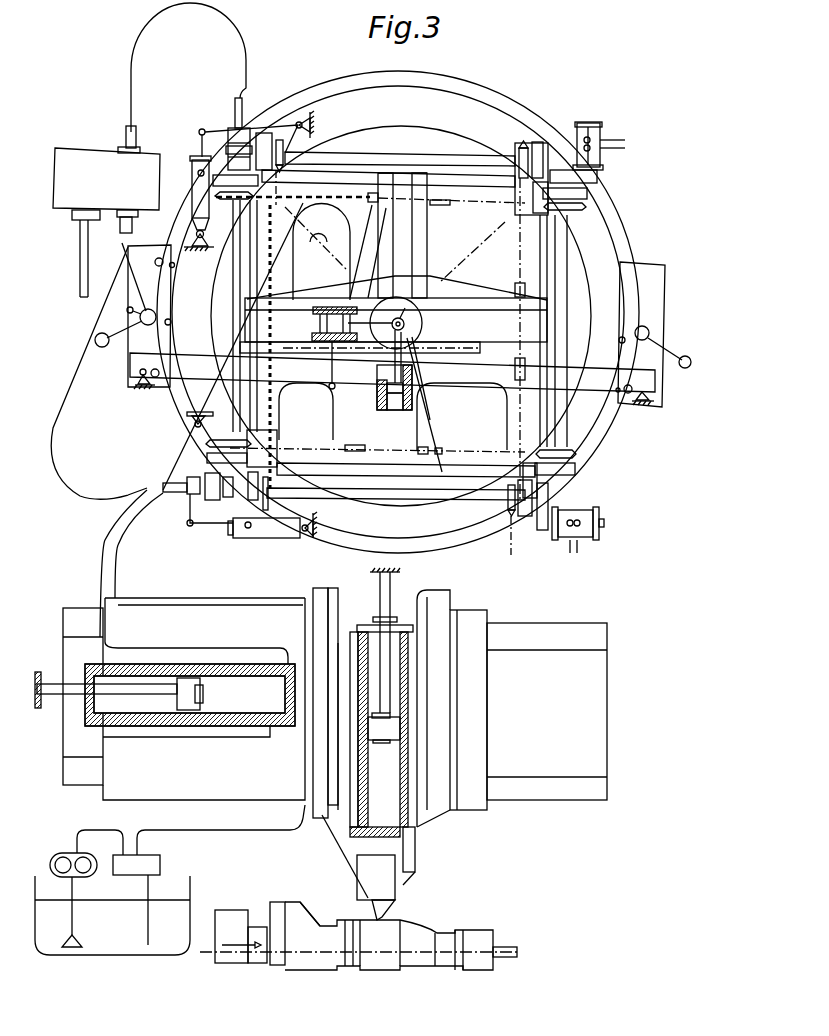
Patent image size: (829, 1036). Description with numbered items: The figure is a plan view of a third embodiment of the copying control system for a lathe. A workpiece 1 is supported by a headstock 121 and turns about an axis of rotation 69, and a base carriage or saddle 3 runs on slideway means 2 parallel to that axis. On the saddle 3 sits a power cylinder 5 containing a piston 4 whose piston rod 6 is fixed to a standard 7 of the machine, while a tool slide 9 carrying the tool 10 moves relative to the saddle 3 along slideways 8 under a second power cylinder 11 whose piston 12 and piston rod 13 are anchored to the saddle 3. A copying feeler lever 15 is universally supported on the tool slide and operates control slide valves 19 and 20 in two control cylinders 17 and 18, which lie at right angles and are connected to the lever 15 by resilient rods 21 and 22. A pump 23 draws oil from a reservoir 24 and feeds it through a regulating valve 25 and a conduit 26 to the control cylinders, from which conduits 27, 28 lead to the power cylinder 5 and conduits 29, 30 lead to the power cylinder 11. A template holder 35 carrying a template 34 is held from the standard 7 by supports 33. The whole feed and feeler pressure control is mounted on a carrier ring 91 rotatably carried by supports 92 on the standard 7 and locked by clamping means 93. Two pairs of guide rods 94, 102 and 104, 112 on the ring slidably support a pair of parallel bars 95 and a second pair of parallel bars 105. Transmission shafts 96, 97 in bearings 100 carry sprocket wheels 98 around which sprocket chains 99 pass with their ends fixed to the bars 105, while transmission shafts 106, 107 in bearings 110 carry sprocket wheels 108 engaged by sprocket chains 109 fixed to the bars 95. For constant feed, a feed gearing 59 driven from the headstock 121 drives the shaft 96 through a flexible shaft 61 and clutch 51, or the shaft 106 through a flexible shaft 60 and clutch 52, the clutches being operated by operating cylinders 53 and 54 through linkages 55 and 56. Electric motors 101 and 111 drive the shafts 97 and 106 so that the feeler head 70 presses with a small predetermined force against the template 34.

The workpiece 1 is at (465, 926).
The slideway means 2 is at (80, 606).
The base carriage or saddle 3 is at (373, 574).
The piston 4 is at (190, 704).
The power cylinder 5 is at (238, 722).
The piston rod 6 is at (53, 696).
The standard 7 is at (140, 383).
The slideways 8 is at (318, 822).
The tool slide 9 is at (340, 846).
The tool 10 is at (388, 908).
The power cylinder 11 is at (405, 765).
The piston 12 is at (392, 727).
The piston rod 13 is at (393, 683).
The copying feeler lever 15 is at (393, 314).
The control cylinder 17 is at (315, 308).
The control cylinder 18 is at (405, 395).
The control slide valve 19 is at (312, 325).
The control slide valve 20 is at (389, 412).
The resilient rod 21 is at (362, 320).
The resilient rod 22 is at (410, 350).
The pump 23 is at (60, 852).
The reservoir 24 is at (172, 900).
The regulating valve 25 is at (125, 876).
The conduit 26 is at (252, 833).
The conduit 27 is at (115, 534).
The conduit 28 is at (124, 540).
The conduit 29 is at (450, 586).
The conduit 30 is at (462, 630).
The supports 33 is at (135, 378).
The template 34 is at (480, 346).
The template holder 35 is at (185, 378).
The clutch 51 is at (230, 130).
The clutch 52 is at (212, 502).
The operating cylinder 53 is at (192, 165).
The operating cylinder 54 is at (240, 540).
The linkage 55 is at (200, 130).
The linkage 56 is at (186, 500).
The feed gearing 59 is at (95, 150).
The flexible shaft 60 is at (120, 262).
The flexible shaft 61 is at (128, 110).
The axis of rotation 69 is at (312, 944).
The feeler head 70 is at (407, 307).
The carrier ring 91 is at (480, 110).
The supports 92 is at (146, 246).
The clamping means 93 is at (142, 307).
The guide rod 94 is at (259, 244).
The parallel bars 95 is at (437, 337).
The transmission shaft 96 is at (226, 284).
The transmission shaft 97 is at (573, 227).
The sprocket wheels 98 is at (228, 201).
The sprocket chains 99 is at (336, 202).
The bearings 100 is at (225, 180).
The electric motor 101 is at (648, 83).
The guide rod 102 is at (537, 267).
The guide rod 104 is at (352, 168).
The parallel bars 105 is at (416, 233).
The transmission shaft 106 is at (398, 503).
The transmission shaft 107 is at (415, 152).
The sprocket wheels 108 is at (280, 138).
The sprocket chains 109 is at (519, 232).
The bearings 110 is at (264, 135).
The electric motor 111 is at (605, 523).
The guide rod 112 is at (301, 463).
The headstock 121 is at (230, 910).